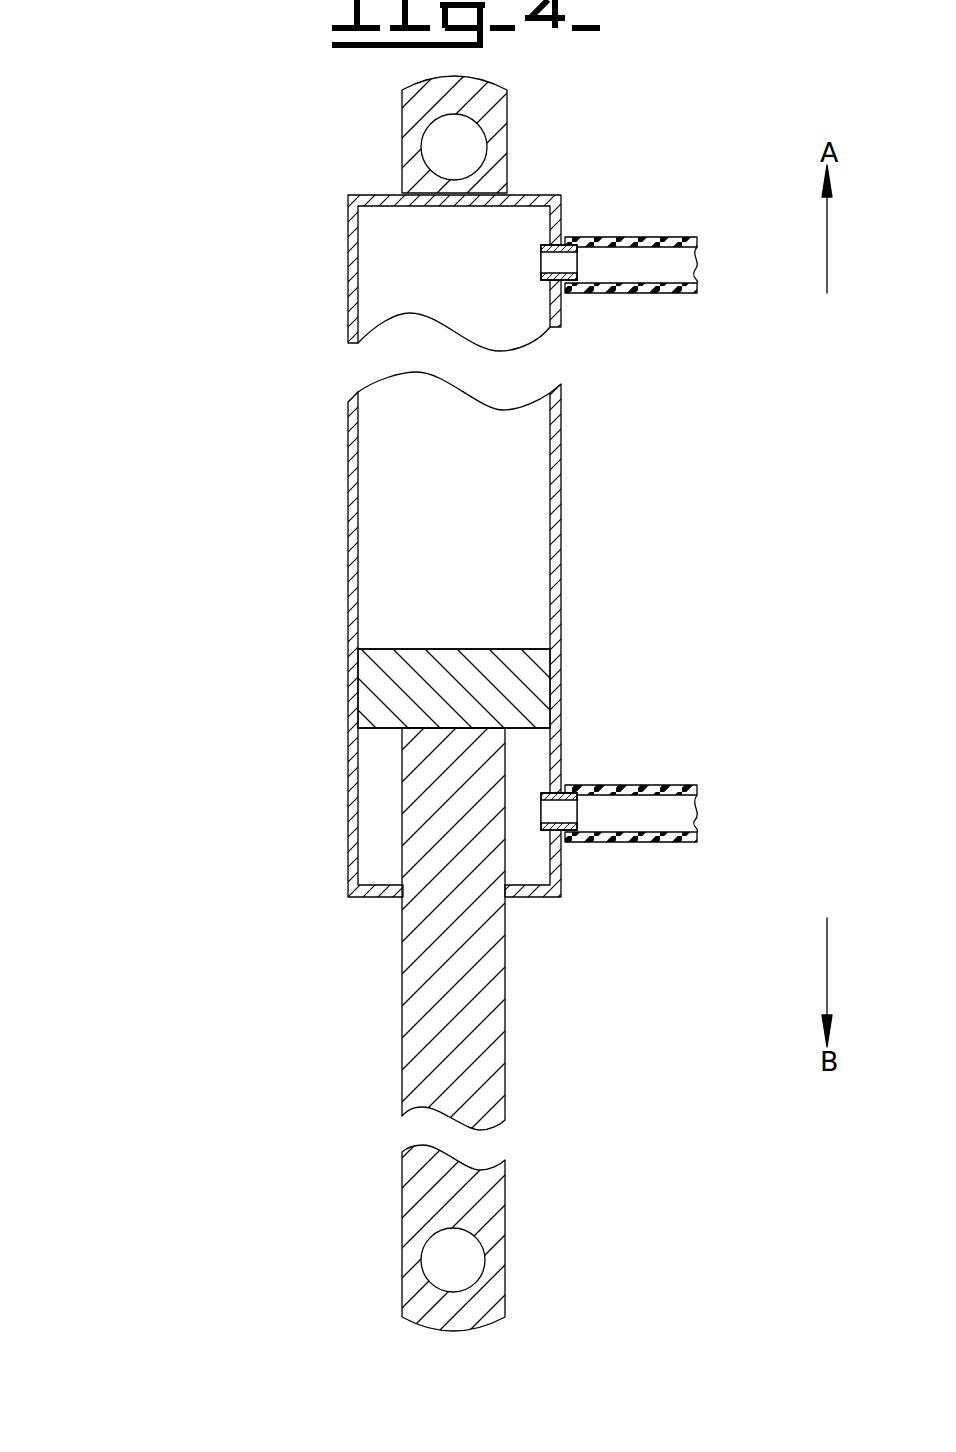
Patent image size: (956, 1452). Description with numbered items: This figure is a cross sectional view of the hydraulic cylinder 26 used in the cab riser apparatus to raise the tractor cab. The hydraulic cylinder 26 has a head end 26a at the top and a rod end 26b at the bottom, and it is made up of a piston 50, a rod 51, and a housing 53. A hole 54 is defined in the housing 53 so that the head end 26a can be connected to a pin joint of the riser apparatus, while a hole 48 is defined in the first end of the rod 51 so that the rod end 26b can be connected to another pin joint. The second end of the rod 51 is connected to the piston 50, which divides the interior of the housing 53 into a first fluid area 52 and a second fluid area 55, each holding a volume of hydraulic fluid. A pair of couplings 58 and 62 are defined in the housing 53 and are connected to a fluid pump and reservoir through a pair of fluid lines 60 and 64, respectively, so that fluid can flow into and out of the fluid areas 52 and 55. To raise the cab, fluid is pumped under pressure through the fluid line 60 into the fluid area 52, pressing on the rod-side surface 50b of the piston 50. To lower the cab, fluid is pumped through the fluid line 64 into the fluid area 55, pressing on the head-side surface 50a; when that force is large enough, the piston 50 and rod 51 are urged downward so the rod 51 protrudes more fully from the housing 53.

The hydraulic cylinder 26 is at (272, 195).
The head end 26a is at (650, 327).
The rod end 26b is at (565, 1063).
The hole 48 is at (453, 1230).
The piston 50 is at (530, 685).
The head-side surface 50a is at (400, 649).
The rod-side surface 50b is at (382, 728).
The rod 51 is at (440, 1003).
The first fluid area 52 is at (358, 833).
The housing 53 is at (561, 493).
The hole 54 is at (453, 117).
The second fluid area 55 is at (358, 465).
The coupling 58 is at (545, 830).
The fluid line 60 is at (616, 785).
The coupling 62 is at (545, 281).
The fluid line 64 is at (616, 237).